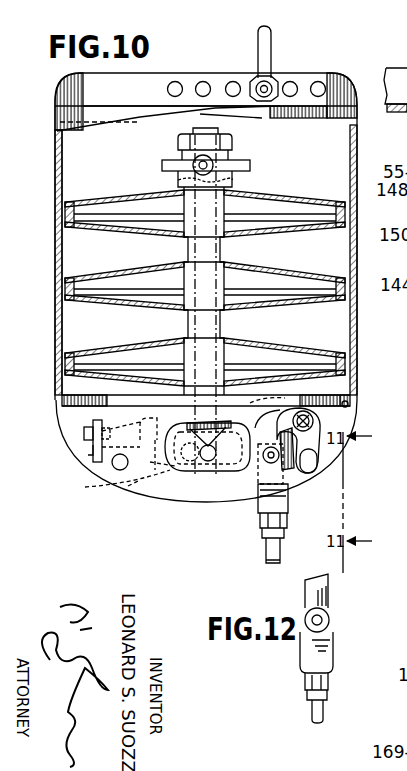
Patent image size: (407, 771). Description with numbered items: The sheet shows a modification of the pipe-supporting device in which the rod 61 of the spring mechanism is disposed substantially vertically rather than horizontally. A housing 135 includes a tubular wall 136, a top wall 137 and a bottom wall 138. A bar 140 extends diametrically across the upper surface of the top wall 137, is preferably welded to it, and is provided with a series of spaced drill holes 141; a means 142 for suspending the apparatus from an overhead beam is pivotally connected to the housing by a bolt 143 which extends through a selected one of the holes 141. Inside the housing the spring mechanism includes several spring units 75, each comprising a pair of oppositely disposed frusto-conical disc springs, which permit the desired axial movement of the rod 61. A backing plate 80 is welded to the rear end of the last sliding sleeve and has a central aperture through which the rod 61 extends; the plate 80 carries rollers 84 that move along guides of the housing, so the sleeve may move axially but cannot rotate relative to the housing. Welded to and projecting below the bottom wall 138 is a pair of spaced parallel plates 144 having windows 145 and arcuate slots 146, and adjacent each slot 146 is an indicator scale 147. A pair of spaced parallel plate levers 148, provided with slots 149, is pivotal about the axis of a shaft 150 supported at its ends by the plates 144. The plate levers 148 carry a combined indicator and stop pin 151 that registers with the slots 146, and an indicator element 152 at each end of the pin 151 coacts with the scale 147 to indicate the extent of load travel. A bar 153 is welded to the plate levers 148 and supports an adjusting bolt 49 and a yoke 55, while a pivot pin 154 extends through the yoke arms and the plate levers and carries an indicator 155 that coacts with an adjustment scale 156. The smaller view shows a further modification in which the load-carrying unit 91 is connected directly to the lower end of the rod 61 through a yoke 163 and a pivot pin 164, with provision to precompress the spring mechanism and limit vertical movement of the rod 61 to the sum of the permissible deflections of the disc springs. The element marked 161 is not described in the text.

In FIG. 10, the adjusting bolt 49 is at (92, 432).
In FIG. 10, the yoke 55 is at (140, 482).
In FIG. 10, the rod 61 is at (232, 271).
In FIG. 12, the rod 61 is at (329, 599).
In FIG. 10, the spring unit 75 is at (318, 195).
In FIG. 10, the backing plate 80 is at (225, 165).
In FIG. 10, the roller 84 is at (195, 163).
In FIG. 12, the load-carrying unit 91 is at (303, 695).
In FIG. 10, the housing 135 is at (54, 236).
In FIG. 10, the tubular wall 136 is at (58, 322).
In FIG. 10, the top wall 137 is at (255, 113).
In FIG. 10, the bottom wall 138 is at (349, 398).
In FIG. 10, the bar 140 is at (136, 86).
In FIG. 10, the drill holes 141 is at (203, 82).
In FIG. 10, the suspending means 142 is at (268, 52).
In FIG. 10, the bolt 143 is at (258, 80).
In FIG. 10, the plates 144 is at (66, 414).
In FIG. 10, the windows 145 is at (193, 471).
In FIG. 10, the arcuate slots 146 is at (316, 461).
In FIG. 10, the indicator scale 147 is at (298, 470).
In FIG. 10, the plate levers 148 is at (128, 486).
In FIG. 10, the slots 149 is at (174, 474).
In FIG. 10, the shaft 150 is at (115, 468).
In FIG. 10, the combined indicator and stop pin 151 is at (350, 405).
In FIG. 10, the indicator element 152 is at (313, 422).
In FIG. 10, the bar 153 is at (86, 456).
In FIG. 10, the pivot pin 154 is at (207, 462).
In FIG. 10, the indicator 155 is at (210, 446).
In FIG. 10, the adjustment scale 156 is at (206, 446).
In FIG. 10, the seat 161 is at (287, 398).
In FIG. 12, the yoke 163 is at (334, 658).
In FIG. 12, the pivot pin 164 is at (325, 622).